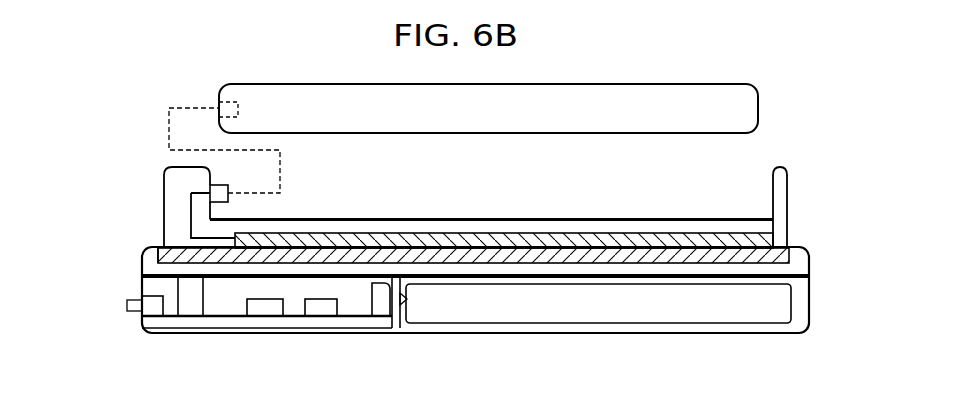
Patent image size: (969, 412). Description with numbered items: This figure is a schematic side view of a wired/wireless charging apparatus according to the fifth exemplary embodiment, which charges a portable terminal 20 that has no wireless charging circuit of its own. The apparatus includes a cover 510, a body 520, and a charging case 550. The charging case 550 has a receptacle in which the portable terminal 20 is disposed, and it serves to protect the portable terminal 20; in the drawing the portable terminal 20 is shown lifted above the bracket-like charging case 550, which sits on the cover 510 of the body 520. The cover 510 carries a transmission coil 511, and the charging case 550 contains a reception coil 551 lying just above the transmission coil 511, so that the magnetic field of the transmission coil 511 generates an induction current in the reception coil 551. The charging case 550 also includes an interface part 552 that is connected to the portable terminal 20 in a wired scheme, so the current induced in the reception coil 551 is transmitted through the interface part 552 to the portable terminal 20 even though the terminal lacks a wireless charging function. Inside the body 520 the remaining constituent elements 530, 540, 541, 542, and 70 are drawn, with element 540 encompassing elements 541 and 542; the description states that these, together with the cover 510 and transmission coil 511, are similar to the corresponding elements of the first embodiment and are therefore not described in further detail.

The portable terminal 20 is at (745, 110).
The interface part 552 is at (212, 191).
The transmission coil 511 is at (182, 260).
The charging case 550 is at (787, 183).
The reception coil 551 is at (768, 232).
The cover 510 is at (803, 263).
The body 520 is at (805, 304).
The constituent element (side member) 540 is at (115, 304).
The constituent element (first portion) 541 is at (142, 283).
The constituent element (second portion) 542 is at (188, 297).
The constituent element (circuit board) 530 is at (233, 325).
The constituent element (battery) 70 is at (667, 313).